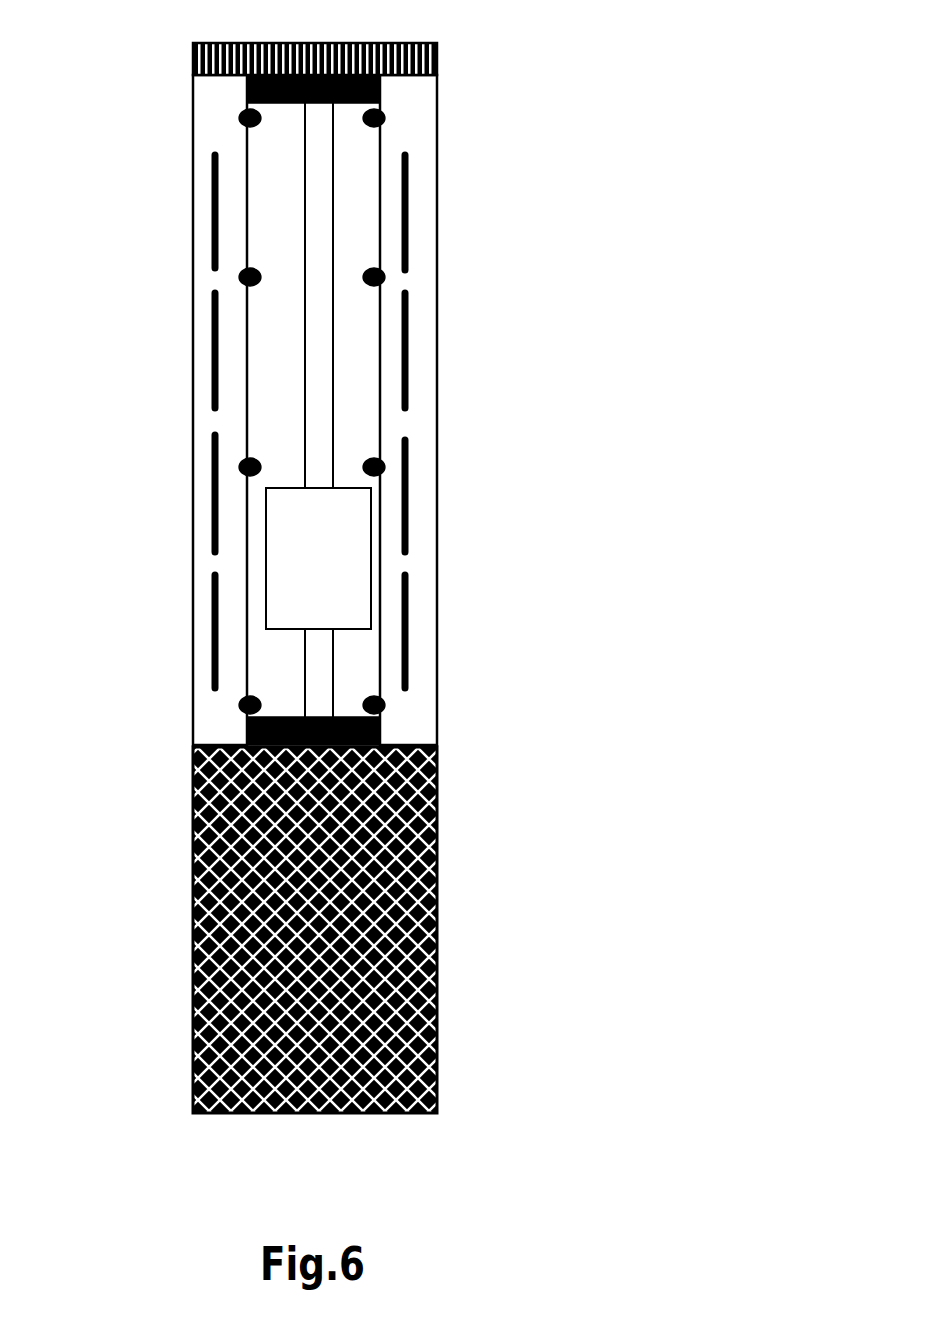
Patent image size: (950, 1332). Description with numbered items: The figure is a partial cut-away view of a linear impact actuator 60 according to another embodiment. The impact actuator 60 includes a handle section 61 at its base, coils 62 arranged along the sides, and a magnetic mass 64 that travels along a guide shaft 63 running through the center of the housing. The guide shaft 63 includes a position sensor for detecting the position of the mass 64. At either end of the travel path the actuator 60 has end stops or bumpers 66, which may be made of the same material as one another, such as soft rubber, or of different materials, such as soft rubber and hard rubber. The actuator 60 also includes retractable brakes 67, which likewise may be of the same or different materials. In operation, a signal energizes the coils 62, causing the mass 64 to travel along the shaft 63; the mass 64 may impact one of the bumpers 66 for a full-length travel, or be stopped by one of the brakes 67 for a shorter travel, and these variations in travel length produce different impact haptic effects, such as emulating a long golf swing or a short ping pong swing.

The linear impact actuator 60 is at (535, 146).
The handle section 61 is at (392, 814).
The coils 62 is at (215, 515).
The guide shaft 63 is at (318, 404).
The magnetic mass 64 is at (318, 552).
The end stops or bumpers 66 is at (353, 92).
The retractable brakes 67 is at (250, 277).